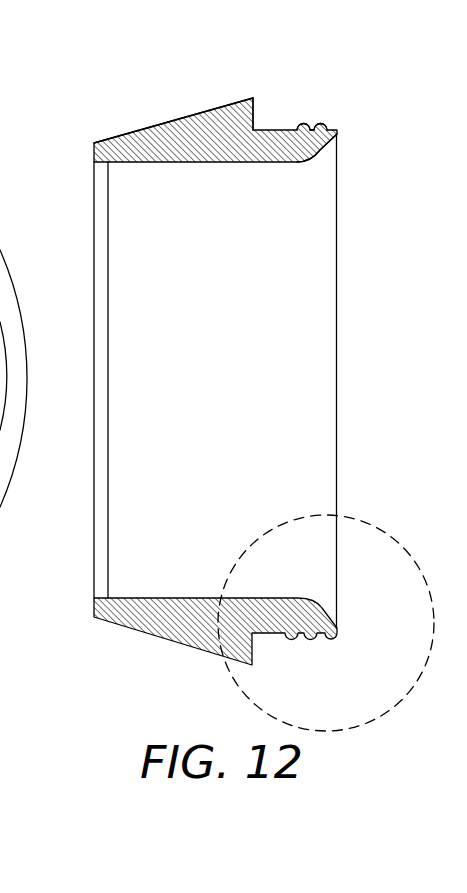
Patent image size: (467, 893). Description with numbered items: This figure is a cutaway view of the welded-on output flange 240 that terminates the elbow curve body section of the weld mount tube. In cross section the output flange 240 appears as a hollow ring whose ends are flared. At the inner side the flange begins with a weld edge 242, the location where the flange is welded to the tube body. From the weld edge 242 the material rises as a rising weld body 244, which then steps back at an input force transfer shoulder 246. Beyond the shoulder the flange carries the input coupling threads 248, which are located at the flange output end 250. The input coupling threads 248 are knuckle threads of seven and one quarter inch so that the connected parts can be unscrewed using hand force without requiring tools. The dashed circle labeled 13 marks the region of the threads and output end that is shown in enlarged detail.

The output flange 240 is at (164, 121).
The weld edge 242 is at (94, 155).
The rising weld body 244 is at (107, 140).
The input force transfer shoulder 246 is at (254, 112).
The input coupling threads 248 is at (302, 123).
The flange output end 250 is at (322, 148).
The detail region shown in FIG. 13 is at (350, 522).